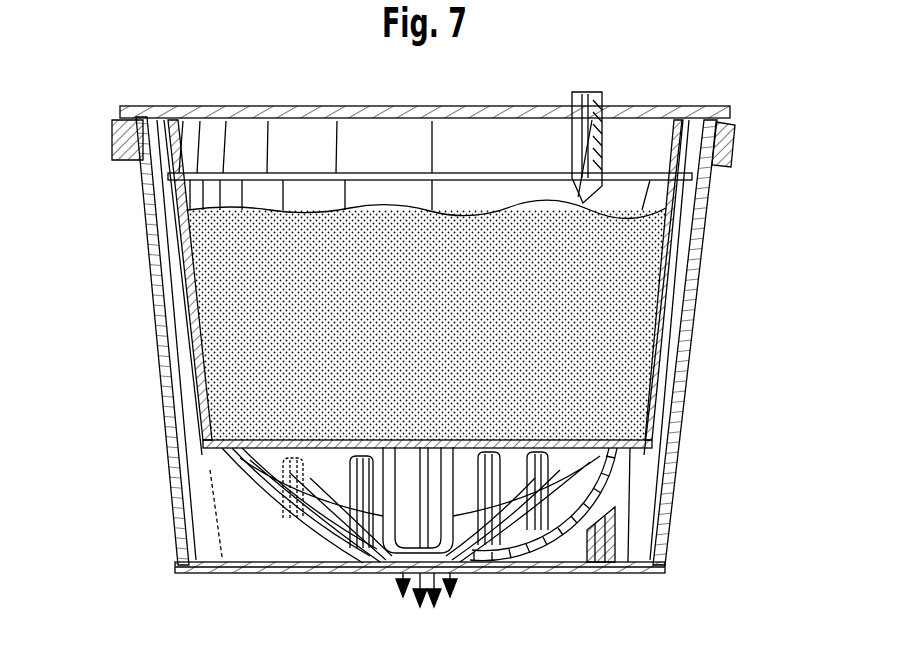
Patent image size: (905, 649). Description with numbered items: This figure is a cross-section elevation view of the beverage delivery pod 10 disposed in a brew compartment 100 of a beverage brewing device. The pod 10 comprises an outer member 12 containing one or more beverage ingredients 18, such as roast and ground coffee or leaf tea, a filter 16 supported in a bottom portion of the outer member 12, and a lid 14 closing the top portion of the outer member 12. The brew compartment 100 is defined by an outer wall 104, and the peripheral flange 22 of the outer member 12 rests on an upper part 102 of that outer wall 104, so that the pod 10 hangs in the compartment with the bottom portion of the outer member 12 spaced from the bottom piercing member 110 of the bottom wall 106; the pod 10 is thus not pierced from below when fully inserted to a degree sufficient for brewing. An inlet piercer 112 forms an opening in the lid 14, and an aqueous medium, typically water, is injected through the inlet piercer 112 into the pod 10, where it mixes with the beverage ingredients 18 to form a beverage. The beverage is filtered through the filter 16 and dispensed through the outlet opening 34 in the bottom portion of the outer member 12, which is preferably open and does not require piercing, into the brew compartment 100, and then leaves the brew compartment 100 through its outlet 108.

The beverage delivery pod 10 is at (730, 86).
The outer member 12 is at (672, 340).
The lid 14 is at (618, 104).
The filter 16 is at (608, 426).
The beverage ingredients 18 is at (610, 278).
The peripheral flange 22 is at (718, 163).
The outlet opening 34 is at (398, 568).
The brew compartment 100 is at (150, 376).
The upper part of the outer wall 102 is at (120, 121).
The outer wall 104 is at (143, 254).
The bottom wall 106 is at (625, 573).
The outlet 108 is at (455, 568).
The bottom piercing member 110 is at (592, 538).
The inlet piercer 112 is at (575, 92).